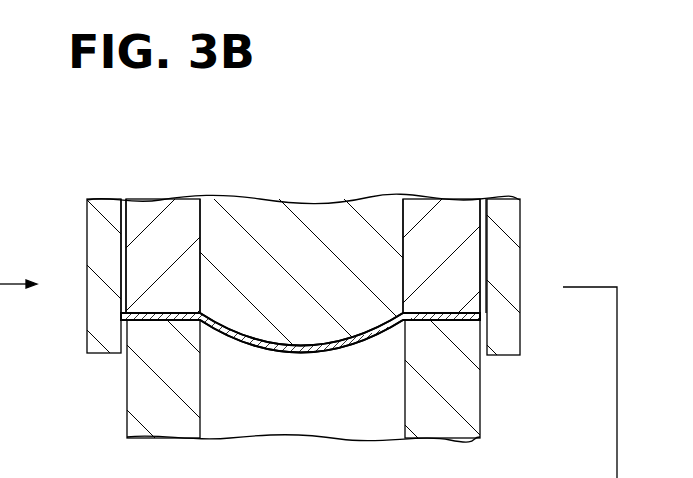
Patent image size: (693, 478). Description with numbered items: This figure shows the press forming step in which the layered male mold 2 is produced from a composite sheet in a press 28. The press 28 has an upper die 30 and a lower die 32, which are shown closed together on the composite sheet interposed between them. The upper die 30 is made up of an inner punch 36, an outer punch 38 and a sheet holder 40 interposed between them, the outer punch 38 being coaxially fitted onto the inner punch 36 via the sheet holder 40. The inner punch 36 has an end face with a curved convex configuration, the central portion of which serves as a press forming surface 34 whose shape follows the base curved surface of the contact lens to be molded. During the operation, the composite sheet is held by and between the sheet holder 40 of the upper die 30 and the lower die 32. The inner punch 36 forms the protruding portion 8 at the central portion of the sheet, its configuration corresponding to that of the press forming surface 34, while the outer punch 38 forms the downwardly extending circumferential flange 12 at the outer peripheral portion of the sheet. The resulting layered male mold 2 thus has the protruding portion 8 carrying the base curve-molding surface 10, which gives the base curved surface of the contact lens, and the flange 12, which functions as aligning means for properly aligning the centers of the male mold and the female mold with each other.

The layered male mold 2 is at (352, 362).
The protruding portion 8 is at (308, 353).
The base curve-molding surface 10 is at (285, 352).
The circumferential flange 12 is at (122, 328).
The press 28 is at (620, 140).
The upper die 30 is at (530, 201).
The lower die 32 is at (500, 387).
The press forming surface 34 is at (252, 347).
The inner punch 36 is at (352, 218).
The outer punch 38 is at (105, 208).
The sheet holder 40 is at (155, 215).